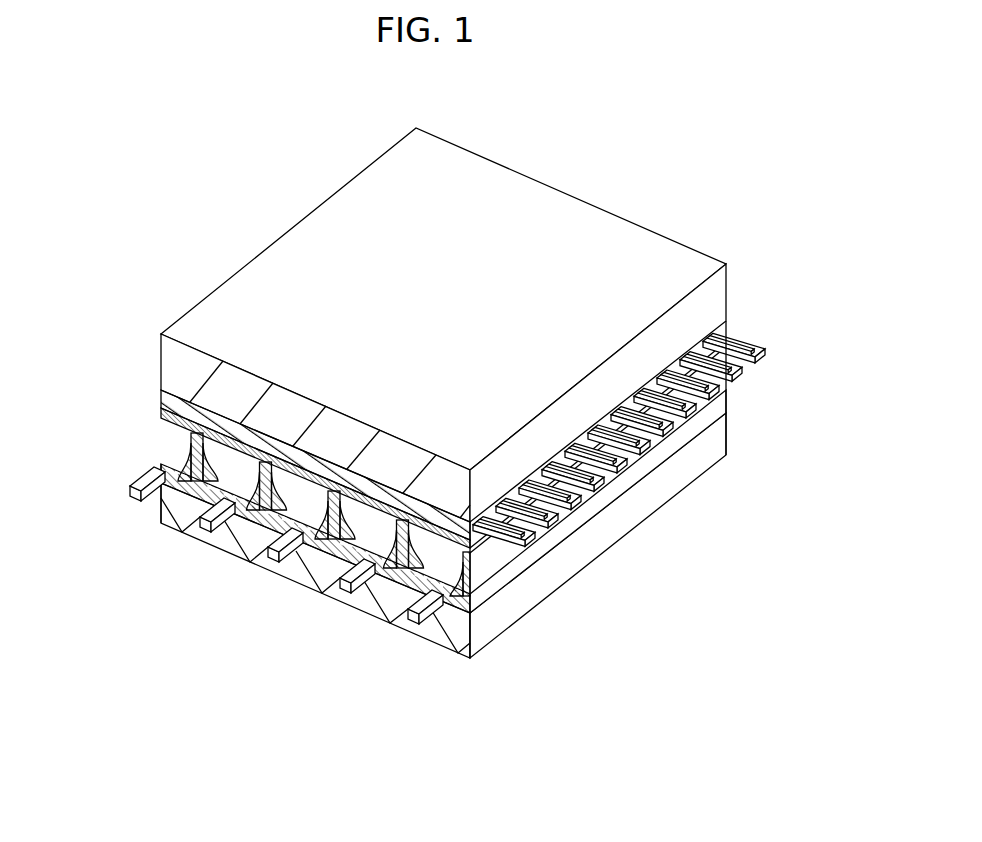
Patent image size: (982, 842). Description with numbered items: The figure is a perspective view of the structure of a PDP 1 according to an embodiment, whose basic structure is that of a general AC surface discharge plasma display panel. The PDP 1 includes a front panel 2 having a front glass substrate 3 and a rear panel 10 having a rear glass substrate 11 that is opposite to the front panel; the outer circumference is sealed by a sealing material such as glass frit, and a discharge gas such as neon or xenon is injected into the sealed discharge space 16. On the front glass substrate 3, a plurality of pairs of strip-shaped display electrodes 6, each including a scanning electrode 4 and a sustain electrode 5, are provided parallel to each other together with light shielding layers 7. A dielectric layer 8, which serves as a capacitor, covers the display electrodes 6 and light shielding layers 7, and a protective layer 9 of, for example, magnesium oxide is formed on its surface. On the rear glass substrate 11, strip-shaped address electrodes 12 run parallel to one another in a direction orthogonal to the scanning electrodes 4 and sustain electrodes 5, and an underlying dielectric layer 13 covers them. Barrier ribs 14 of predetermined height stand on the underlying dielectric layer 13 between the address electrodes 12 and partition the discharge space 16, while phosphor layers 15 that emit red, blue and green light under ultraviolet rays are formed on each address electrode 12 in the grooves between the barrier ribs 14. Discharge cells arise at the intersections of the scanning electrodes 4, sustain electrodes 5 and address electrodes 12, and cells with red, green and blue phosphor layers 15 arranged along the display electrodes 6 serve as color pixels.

The PDP 1 is at (421, 435).
The front panel 2 is at (427, 408).
The front glass substrate 3 is at (540, 205).
The scanning electrode 4 is at (597, 477).
The sustain electrode 5 is at (620, 458).
The display electrodes 6 is at (619, 486).
The light shielding layer 7 is at (633, 437).
The dielectric layer 8 is at (417, 563).
The protective layer 9 is at (487, 535).
The rear panel 10 is at (402, 575).
The rear glass substrate 11 is at (422, 628).
The address electrode 12 is at (186, 531).
The underlying dielectric layer 13 is at (253, 508).
The barrier rib 14 is at (328, 550).
The phosphor layer 15 is at (383, 567).
The discharge space 16 is at (447, 570).